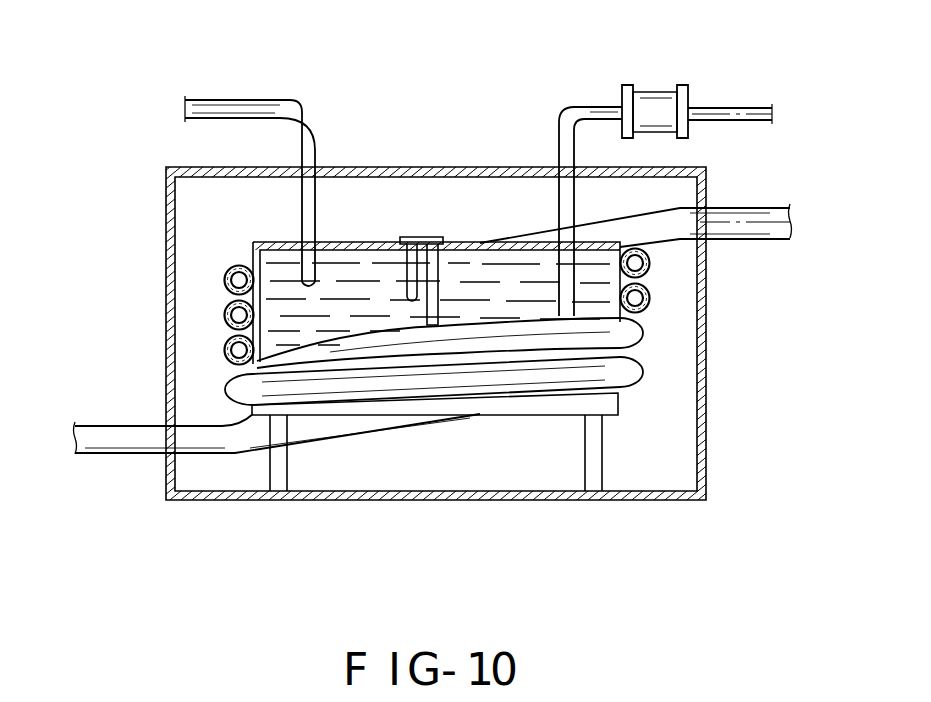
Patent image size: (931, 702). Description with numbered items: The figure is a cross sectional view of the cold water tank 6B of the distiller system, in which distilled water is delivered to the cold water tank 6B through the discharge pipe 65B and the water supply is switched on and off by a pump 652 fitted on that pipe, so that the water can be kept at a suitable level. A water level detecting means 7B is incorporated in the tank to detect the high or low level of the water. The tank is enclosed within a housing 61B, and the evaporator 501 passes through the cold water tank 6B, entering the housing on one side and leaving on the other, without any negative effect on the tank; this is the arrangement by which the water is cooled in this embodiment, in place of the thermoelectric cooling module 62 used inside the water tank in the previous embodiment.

The thermoelectric cooling module 62 is at (255, 108).
The cold water tank 6B is at (358, 242).
The water level detecting means 7B is at (442, 270).
The discharge pipe 65B is at (568, 112).
The pump 652 is at (656, 92).
The evaporator 501 is at (745, 224).
The housing 61B is at (462, 502).